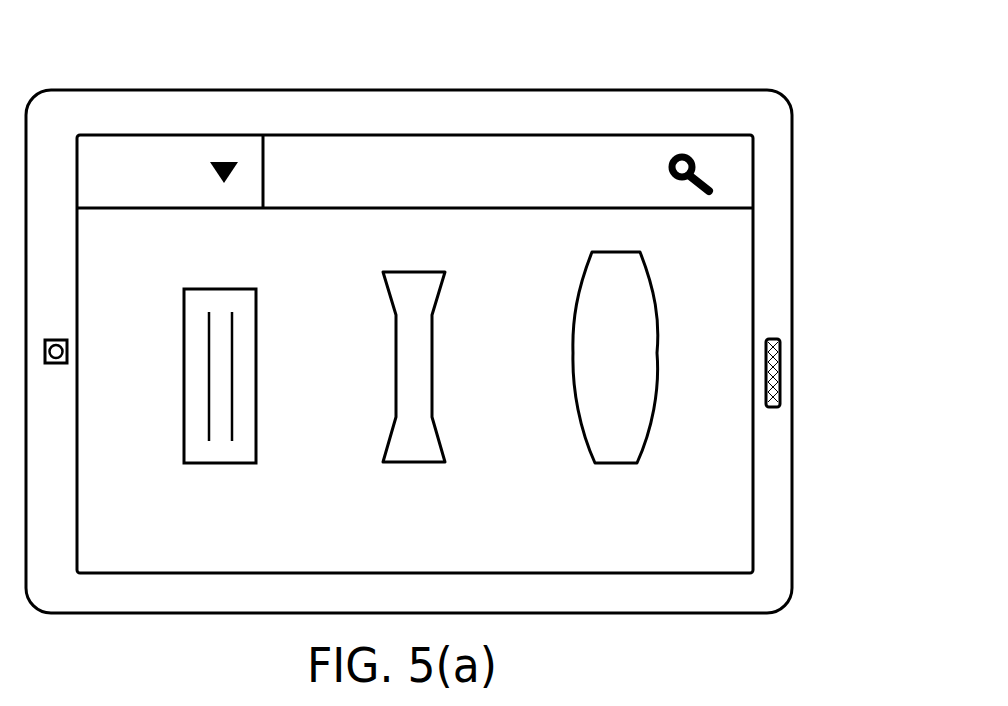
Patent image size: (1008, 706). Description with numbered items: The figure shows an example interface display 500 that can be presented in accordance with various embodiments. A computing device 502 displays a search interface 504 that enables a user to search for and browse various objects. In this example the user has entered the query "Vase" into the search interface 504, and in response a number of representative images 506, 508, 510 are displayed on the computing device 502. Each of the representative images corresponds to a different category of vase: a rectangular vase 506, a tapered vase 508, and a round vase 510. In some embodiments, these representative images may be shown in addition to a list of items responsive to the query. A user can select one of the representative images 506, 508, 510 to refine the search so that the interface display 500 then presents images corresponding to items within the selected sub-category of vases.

The interface display 500 is at (464, 310).
The computing device 502 is at (195, 90).
The search interface 504 is at (478, 135).
The representative image of rectangular vase 506 is at (219, 463).
The representative image of tapered vase 508 is at (417, 462).
The representative image of round vase 510 is at (615, 463).